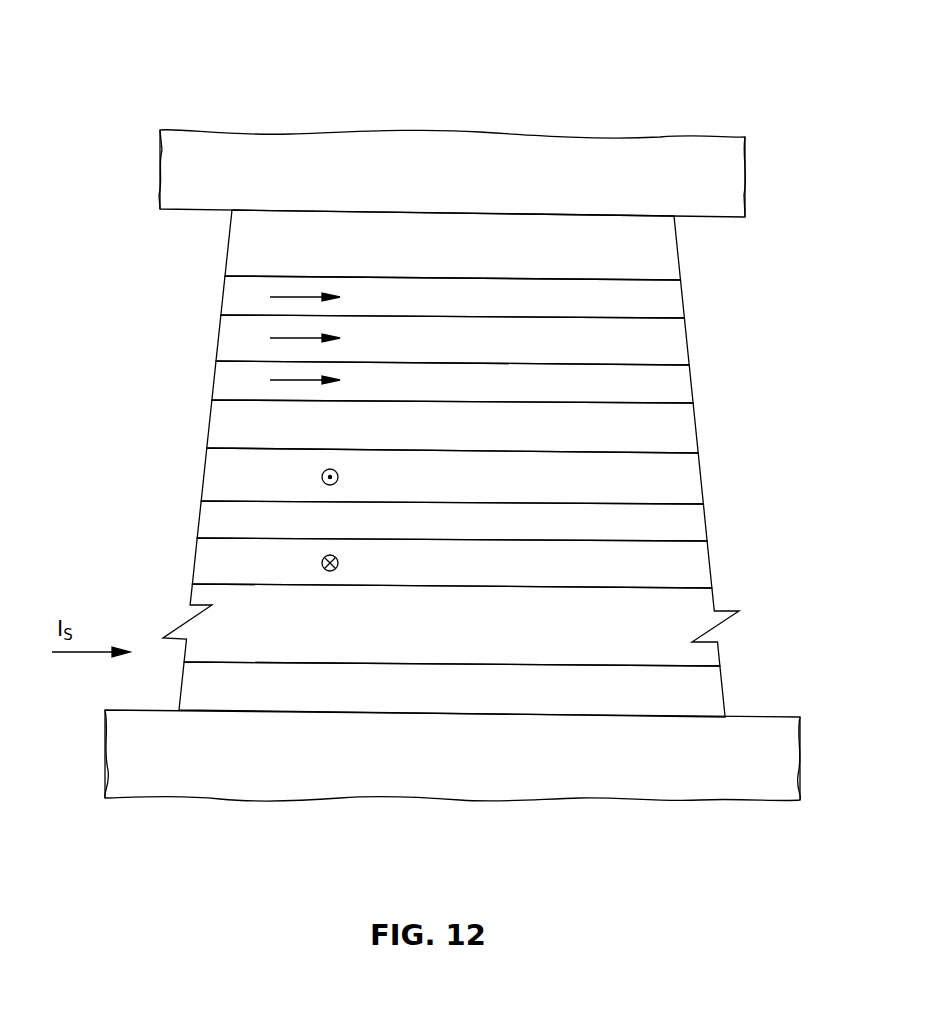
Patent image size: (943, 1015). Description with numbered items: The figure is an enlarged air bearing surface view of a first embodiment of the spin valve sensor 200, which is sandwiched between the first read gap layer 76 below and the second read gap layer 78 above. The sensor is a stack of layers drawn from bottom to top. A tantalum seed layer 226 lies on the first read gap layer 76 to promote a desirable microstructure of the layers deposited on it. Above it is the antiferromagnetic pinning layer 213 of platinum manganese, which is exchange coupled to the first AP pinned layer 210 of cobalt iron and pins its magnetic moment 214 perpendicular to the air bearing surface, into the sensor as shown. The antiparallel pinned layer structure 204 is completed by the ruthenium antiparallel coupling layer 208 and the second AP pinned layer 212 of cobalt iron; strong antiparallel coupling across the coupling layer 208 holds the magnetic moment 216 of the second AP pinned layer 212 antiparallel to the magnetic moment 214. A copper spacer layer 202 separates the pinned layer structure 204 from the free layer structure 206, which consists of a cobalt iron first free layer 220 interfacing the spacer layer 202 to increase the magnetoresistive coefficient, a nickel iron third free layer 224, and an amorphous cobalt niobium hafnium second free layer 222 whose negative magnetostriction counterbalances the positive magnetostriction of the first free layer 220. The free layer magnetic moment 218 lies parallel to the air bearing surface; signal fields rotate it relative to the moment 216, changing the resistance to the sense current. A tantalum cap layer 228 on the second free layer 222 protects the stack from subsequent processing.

The first read gap layer 76 is at (762, 790).
The second read gap layer 78 is at (740, 160).
The spin valve sensor 200 is at (150, 210).
The spacer layer 202 is at (697, 428).
The antiparallel pinned layer structure 204 is at (65, 584).
The free layer structure 206 is at (115, 400).
The antiparallel coupling layer 208 is at (707, 518).
The first AP pinned layer 210 is at (710, 558).
The second AP pinned layer 212 is at (703, 474).
The antiferromagnetic pinning layer 213 is at (718, 655).
The magnetic moment of the first AP pinned layer 214 is at (322, 565).
The magnetic moment of the second AP pinned layer 216 is at (322, 479).
The magnetic moment of the free layer structure 218 is at (290, 338).
The first free layer 220 is at (693, 385).
The second free layer 222 is at (683, 297).
The third free layer 224 is at (690, 340).
The seed layer 226 is at (722, 688).
The cap layer 228 is at (678, 245).